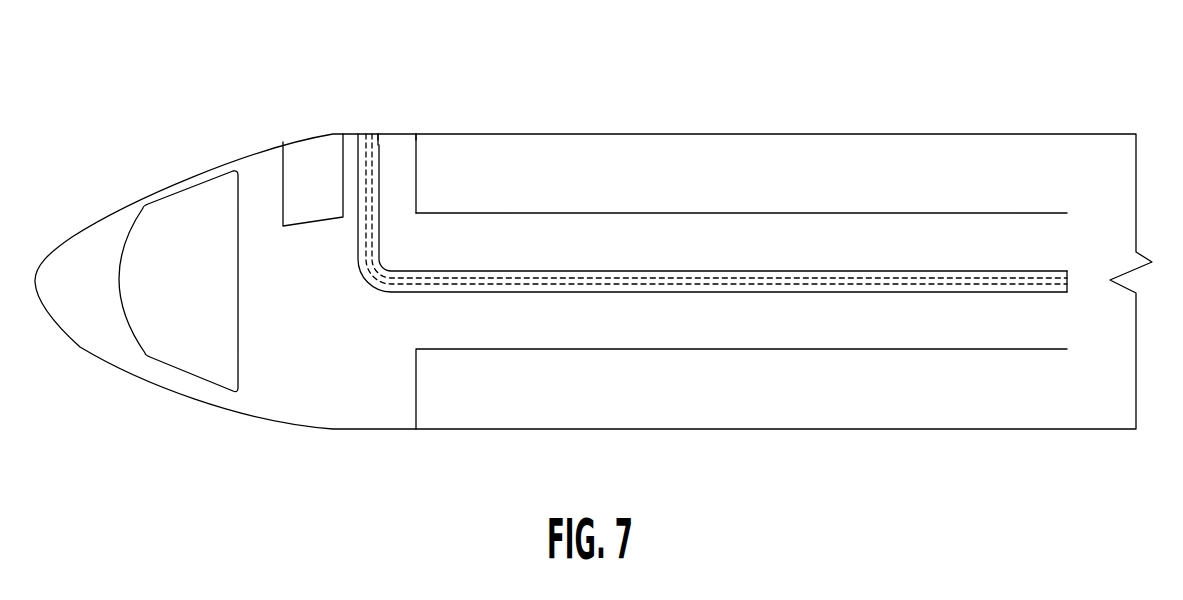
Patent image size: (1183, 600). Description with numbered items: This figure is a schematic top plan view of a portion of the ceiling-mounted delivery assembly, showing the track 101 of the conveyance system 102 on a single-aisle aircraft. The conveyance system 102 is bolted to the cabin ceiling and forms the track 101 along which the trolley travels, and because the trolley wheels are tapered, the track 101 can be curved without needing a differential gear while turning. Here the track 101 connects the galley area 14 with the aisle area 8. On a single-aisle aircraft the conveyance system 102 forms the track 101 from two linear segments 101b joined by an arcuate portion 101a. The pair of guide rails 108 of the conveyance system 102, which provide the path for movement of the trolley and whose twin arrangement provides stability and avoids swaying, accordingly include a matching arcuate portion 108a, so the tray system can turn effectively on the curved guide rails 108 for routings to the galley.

The aisle area 8 is at (705, 185).
The galley area 14 is at (392, 145).
The track 101 is at (649, 233).
The arcuate portion 101a is at (390, 274).
The linear segments 101b is at (358, 160).
The conveyance system 102 is at (960, 273).
The guide rails 108 is at (897, 280).
The arcuate portion of guide rails 108a is at (385, 262).